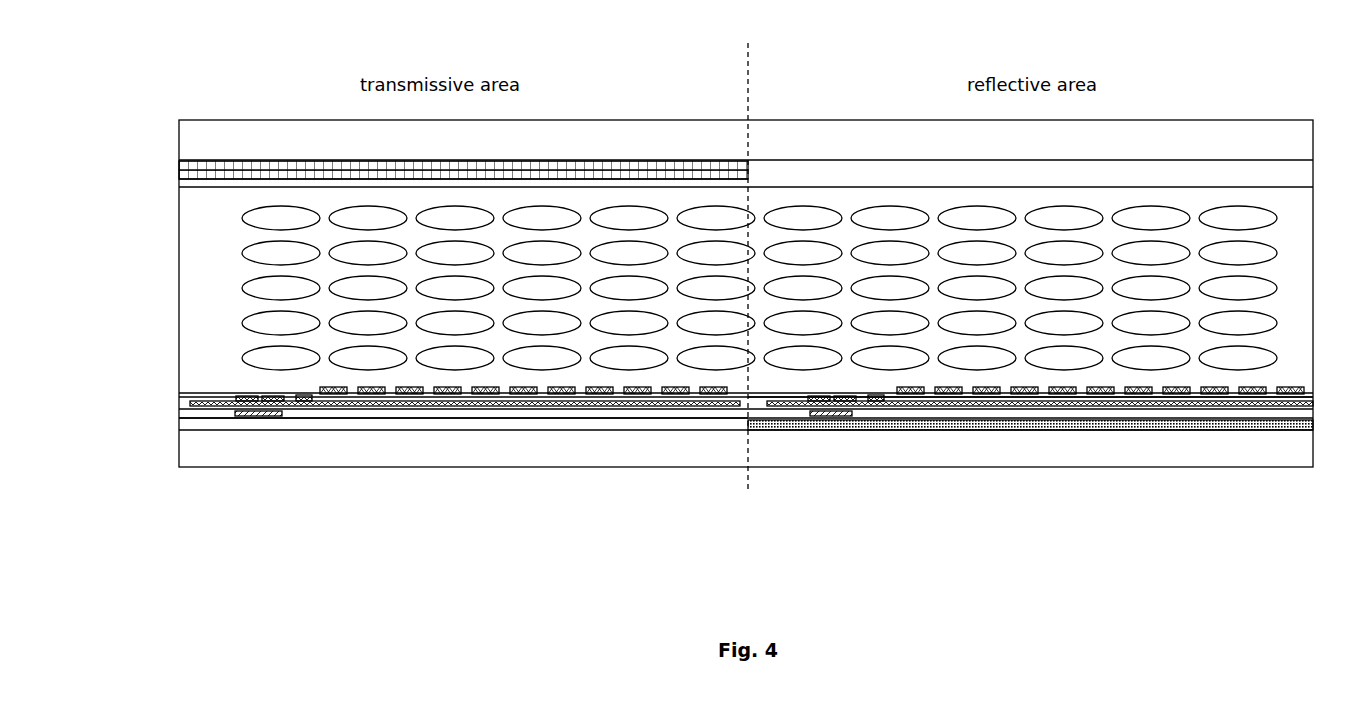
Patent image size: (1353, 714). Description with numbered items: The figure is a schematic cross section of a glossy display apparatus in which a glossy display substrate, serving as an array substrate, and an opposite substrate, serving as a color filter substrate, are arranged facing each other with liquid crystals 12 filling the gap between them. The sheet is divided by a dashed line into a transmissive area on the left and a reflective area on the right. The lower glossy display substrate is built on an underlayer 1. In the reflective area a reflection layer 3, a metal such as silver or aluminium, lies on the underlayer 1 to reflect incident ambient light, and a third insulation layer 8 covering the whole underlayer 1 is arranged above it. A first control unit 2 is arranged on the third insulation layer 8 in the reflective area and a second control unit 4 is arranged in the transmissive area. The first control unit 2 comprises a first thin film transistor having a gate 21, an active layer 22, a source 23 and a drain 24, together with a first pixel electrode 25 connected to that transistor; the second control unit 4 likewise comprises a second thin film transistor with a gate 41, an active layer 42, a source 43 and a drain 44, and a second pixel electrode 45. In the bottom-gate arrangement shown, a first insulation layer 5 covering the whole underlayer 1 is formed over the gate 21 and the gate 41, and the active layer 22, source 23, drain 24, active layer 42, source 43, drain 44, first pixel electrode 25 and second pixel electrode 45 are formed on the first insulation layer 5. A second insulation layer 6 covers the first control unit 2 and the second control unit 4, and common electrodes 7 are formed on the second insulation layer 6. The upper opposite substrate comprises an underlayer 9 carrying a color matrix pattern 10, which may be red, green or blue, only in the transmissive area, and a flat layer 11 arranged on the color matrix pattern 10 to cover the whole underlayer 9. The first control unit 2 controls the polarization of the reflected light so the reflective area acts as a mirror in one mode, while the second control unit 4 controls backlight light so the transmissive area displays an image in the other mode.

The underlayer 1 is at (1277, 450).
The first control unit 2 is at (1024, 507).
The reflection layer 3 is at (1197, 428).
The second control unit 4 is at (451, 507).
The first insulation layer 5 is at (1000, 412).
The second insulation layer 6 is at (1138, 400).
The common electrodes 7 is at (1060, 393).
The third insulation layer 8 is at (688, 421).
The underlayer 9 is at (640, 145).
The color matrix pattern 10 is at (548, 165).
The flat layer 11 is at (812, 172).
The liquid crystals 12 is at (1178, 245).
The gate 21 is at (842, 409).
The active layer 22 is at (822, 412).
The source 23 is at (790, 409).
The drain 24 is at (869, 409).
The first pixel electrode 25 is at (947, 407).
The gate 41 is at (270, 409).
The active layer 42 is at (250, 412).
The source 43 is at (218, 409).
The drain 44 is at (297, 409).
The second pixel electrode 45 is at (375, 407).